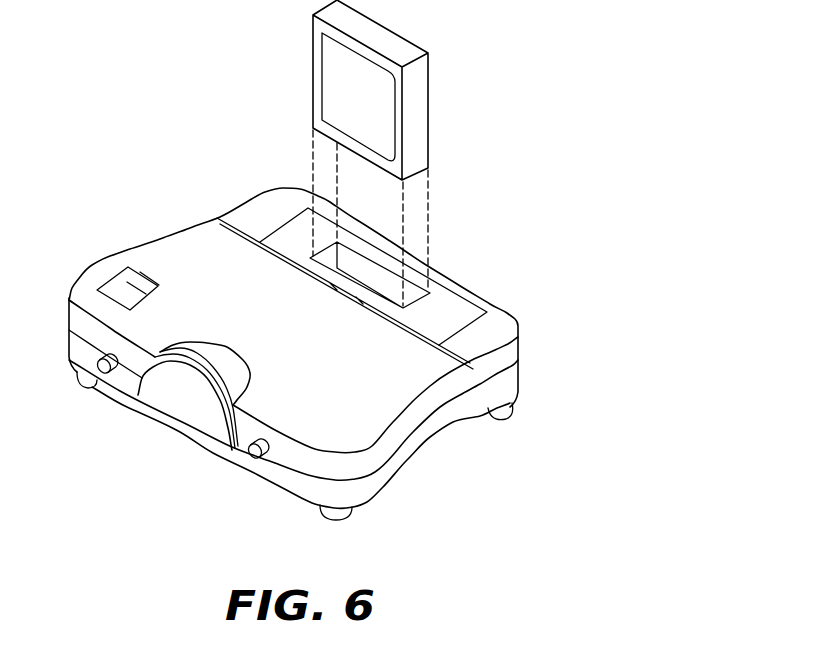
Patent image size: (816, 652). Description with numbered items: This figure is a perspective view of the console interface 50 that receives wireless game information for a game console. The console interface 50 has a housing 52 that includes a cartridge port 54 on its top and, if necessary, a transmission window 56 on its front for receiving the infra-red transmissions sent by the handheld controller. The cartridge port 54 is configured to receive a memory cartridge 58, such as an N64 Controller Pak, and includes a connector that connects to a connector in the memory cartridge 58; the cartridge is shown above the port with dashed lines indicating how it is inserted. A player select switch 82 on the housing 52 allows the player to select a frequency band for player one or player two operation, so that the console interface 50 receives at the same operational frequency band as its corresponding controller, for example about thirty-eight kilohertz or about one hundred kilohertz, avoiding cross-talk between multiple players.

The console interface 50 is at (294, 345).
The housing 52 is at (405, 458).
The cartridge port 54 is at (413, 295).
The transmission window 56 is at (163, 397).
The memory cartridge 58 is at (418, 100).
The player select switch 82 is at (148, 282).